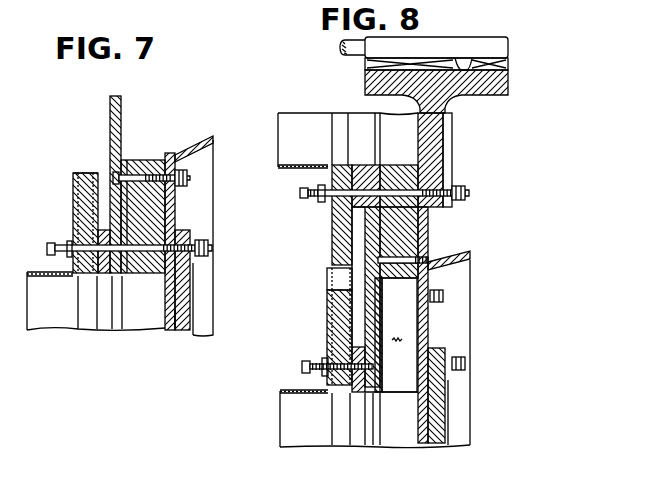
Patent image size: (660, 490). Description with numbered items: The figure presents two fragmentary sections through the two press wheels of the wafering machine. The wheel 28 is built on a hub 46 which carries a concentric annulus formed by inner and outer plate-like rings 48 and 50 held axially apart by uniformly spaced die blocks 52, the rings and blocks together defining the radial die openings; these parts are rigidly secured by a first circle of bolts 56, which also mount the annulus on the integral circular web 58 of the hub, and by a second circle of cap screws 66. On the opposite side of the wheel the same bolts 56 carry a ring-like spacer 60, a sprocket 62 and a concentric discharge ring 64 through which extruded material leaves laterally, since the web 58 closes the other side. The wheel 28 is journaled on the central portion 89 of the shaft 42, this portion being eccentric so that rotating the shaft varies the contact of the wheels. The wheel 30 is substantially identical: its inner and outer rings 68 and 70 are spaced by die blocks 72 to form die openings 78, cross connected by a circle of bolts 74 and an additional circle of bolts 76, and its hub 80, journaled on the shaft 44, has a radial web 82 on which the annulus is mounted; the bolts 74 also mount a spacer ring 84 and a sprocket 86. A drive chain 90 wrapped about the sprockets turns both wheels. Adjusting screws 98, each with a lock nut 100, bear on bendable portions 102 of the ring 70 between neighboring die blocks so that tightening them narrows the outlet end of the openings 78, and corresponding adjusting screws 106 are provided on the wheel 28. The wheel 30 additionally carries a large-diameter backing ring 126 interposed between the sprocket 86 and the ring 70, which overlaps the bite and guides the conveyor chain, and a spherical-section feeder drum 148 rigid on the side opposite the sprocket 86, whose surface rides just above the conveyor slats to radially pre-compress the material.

In FIG. 8, the wheel 28 is at (396, 108).
In FIG. 7, the wheel 30 is at (219, 127).
In FIG. 8, the wheel 30 is at (456, 246).
In FIG. 8, the shaft 42 is at (338, 46).
In FIG. 7, the shaft 44 is at (9, 473).
In FIG. 8, the hub 46 is at (487, 86).
In FIG. 8, the inner plate-like ring 48 is at (452, 129).
In FIG. 8, the outer plate-like ring 50 is at (378, 165).
In FIG. 8, the die block 52 is at (397, 165).
In FIG. 8, the bolts 56 is at (468, 192).
In FIG. 8, the circular web 58 is at (452, 143).
In FIG. 8, the ring-like spacer 60 is at (358, 210).
In FIG. 8, the sprocket 62 is at (331, 219).
In FIG. 7, the discharge ring 64 is at (120, 238).
In FIG. 8, the discharge ring 64 is at (290, 168).
In FIG. 8, the cap screws 66 is at (427, 246).
In FIG. 7, the inner ring 68 is at (170, 160).
In FIG. 8, the inner ring 68 is at (428, 328).
In FIG. 7, the outer ring 70 is at (125, 160).
In FIG. 8, the outer ring 70 is at (383, 390).
In FIG. 7, the die blocks 72 is at (150, 160).
In FIG. 8, the die blocks 72 is at (407, 394).
In FIG. 7, the bolts 74 is at (212, 247).
In FIG. 7, the bolts 76 is at (190, 178).
In FIG. 8, the die openings 78 is at (402, 339).
In FIG. 7, the hub 80 is at (9, 427).
In FIG. 7, the radial web 82 is at (172, 326).
In FIG. 8, the radial web 82 is at (423, 430).
In FIG. 7, the spacer ring 84 is at (103, 275).
In FIG. 8, the spacer ring 84 is at (360, 392).
In FIG. 7, the sprocket 86 is at (86, 173).
In FIG. 8, the sprocket 86 is at (340, 330).
In FIG. 8, the central portion 89 is at (461, 44).
In FIG. 7, the drive chain 90 is at (73, 184).
In FIG. 8, the drive chain 90 is at (328, 279).
In FIG. 7, the adjusting screws 98 is at (51, 247).
In FIG. 8, the adjusting screws 98 is at (303, 365).
In FIG. 8, the lock nut 100 is at (322, 373).
In FIG. 8, the portion of the ring 102 is at (381, 382).
In FIG. 8, the adjusting screws 106 is at (300, 193).
In FIG. 7, the radial flange or ring 126 is at (118, 96).
In FIG. 8, the radial flange or ring 126 is at (331, 249).
In FIG. 7, the feeder drum 148 is at (215, 140).
In FIG. 8, the feeder drum 148 is at (464, 263).